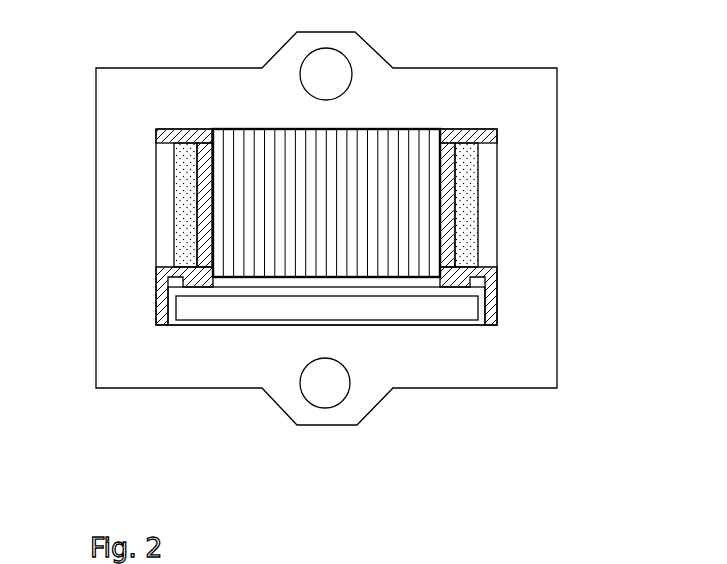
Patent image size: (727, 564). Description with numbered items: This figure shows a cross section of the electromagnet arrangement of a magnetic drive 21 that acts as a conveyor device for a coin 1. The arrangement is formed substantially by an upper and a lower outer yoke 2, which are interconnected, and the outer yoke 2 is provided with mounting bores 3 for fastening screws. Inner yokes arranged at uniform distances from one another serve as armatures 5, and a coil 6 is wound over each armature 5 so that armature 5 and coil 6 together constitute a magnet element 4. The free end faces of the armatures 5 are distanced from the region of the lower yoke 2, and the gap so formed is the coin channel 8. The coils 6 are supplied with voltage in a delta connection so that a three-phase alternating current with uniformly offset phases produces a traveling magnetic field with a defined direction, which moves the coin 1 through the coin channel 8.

The coin 1 is at (214, 310).
The outer yoke 2 is at (428, 85).
The mounting bore 3 is at (335, 72).
The magnet element 4 is at (503, 65).
The armature 5 is at (233, 165).
The coil 6 is at (188, 177).
The coin channel 8 is at (173, 328).
The magnetic drive 21 is at (357, 237).